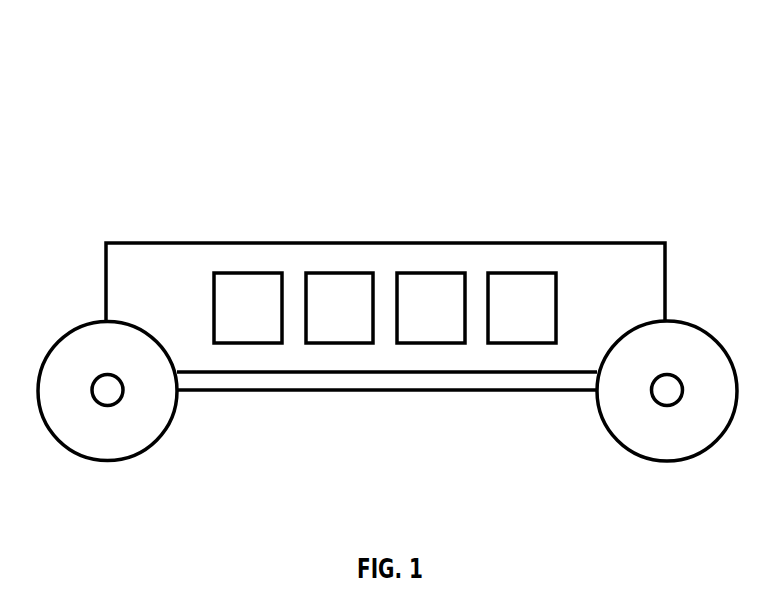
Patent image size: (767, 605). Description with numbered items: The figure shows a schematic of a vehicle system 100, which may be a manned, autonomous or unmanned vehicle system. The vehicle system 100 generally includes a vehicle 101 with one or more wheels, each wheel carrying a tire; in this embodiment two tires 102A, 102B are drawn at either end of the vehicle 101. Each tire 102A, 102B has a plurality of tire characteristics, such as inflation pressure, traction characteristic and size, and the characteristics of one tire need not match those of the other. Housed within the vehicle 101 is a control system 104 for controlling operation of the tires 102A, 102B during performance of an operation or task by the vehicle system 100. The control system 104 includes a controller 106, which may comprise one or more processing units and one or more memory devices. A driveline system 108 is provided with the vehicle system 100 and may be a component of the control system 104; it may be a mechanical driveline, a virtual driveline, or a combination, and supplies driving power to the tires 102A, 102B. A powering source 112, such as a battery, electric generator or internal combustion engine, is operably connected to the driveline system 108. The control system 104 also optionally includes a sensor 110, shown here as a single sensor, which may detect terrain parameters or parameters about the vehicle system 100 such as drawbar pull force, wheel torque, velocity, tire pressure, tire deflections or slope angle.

The vehicle system 100 is at (189, 86).
The vehicle 101 is at (115, 252).
The tire 102A is at (87, 342).
The tire 102B is at (705, 367).
The control system 104 is at (304, 168).
The controller 106 is at (227, 285).
The driveline system 108 is at (318, 277).
The sensor 110 is at (417, 285).
The powering source 112 is at (528, 287).